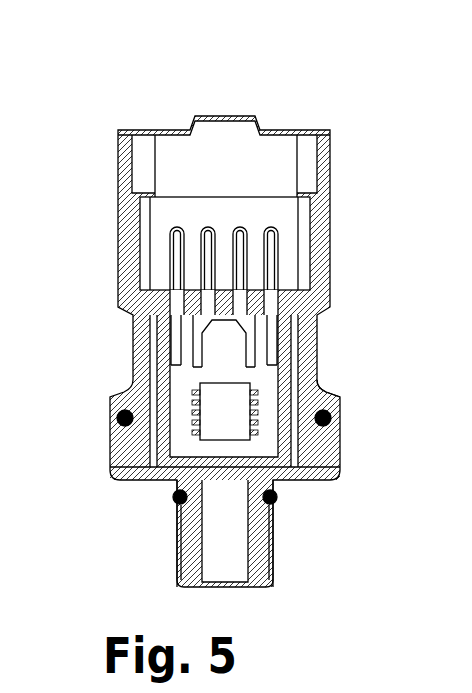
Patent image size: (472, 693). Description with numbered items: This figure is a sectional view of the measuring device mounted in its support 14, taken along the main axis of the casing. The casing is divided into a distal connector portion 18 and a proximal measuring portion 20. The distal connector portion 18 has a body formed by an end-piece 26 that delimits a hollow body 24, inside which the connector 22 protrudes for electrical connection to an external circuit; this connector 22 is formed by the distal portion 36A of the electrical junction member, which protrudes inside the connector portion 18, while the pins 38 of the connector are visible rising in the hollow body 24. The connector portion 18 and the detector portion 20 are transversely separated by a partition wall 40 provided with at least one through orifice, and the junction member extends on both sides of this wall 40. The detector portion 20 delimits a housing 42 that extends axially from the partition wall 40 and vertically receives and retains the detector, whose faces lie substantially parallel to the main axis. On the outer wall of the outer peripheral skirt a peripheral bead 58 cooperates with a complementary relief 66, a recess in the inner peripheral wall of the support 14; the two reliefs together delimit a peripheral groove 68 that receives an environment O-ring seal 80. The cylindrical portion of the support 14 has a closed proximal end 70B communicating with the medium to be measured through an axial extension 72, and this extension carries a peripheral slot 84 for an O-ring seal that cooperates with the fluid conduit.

The support 14 is at (140, 503).
The distal connector portion 18 is at (127, 128).
The proximal measuring portion 20 is at (133, 364).
The connector 22 is at (287, 267).
The hollow body 24 is at (310, 183).
The end-piece 26 is at (310, 140).
The distal portion of the electrical junction member 36A is at (168, 283).
The terminal pins 38 is at (197, 268).
The partition wall 40 is at (300, 312).
The housing 42 is at (157, 352).
The peripheral bead 58 is at (137, 390).
The complementary relief 66 is at (125, 420).
The peripheral groove 68 is at (323, 417).
The closed proximal end 70B is at (173, 482).
The axial extension 72 is at (185, 543).
The environment O-ring seal 80 is at (333, 440).
The peripheral slot 84 is at (273, 513).